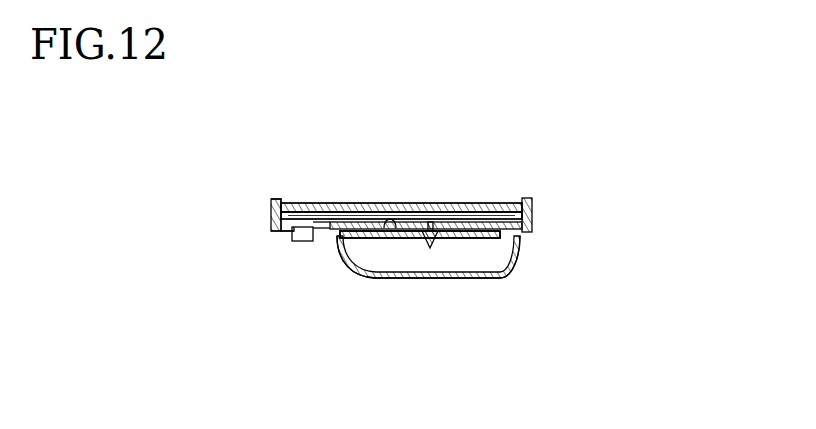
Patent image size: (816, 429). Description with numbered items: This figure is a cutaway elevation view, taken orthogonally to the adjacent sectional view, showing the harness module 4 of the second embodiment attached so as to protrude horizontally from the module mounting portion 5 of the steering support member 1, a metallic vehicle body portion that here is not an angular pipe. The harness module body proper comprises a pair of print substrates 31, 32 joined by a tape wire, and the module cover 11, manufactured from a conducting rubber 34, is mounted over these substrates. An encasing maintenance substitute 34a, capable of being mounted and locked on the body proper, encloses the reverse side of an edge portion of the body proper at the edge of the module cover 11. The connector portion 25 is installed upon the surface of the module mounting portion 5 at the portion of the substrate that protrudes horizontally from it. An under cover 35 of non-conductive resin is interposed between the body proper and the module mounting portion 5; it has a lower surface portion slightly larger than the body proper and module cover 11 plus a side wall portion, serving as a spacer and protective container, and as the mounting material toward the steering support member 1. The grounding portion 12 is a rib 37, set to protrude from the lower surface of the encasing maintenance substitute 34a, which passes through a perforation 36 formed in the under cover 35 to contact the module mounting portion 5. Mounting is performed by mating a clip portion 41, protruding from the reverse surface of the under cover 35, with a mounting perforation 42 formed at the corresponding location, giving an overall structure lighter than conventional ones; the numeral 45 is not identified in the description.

The steering support member 1 is at (368, 288).
The harness module 4 is at (485, 184).
The module mounting portion 5 is at (389, 224).
The module cover 11 is at (407, 216).
The grounding portion 12 is at (527, 234).
The connector portion 25 is at (302, 241).
The substrate 31 is at (352, 205).
The substrate 32 is at (401, 207).
The conducting rubber 34 is at (401, 215).
The encasing maintenance substitute 34a is at (526, 223).
The under cover 35 is at (530, 206).
The perforation 36 is at (494, 256).
The rib 37 is at (420, 234).
The clip portion 41 is at (424, 240).
The mounting perforation 42 is at (433, 229).
The member 45 is at (420, 234).